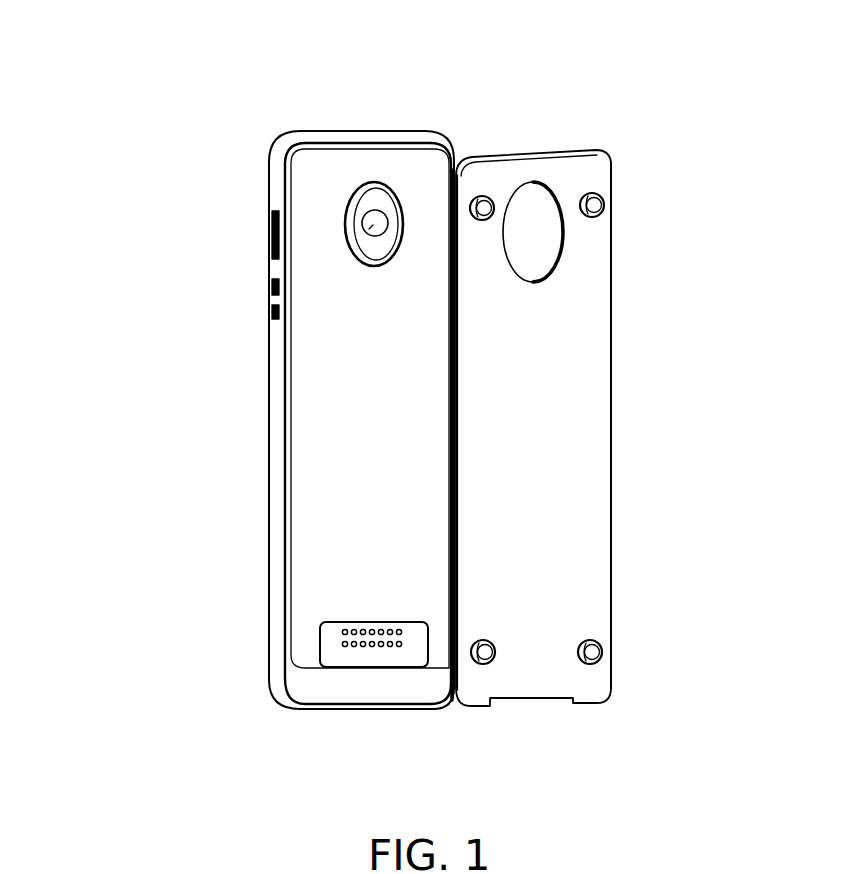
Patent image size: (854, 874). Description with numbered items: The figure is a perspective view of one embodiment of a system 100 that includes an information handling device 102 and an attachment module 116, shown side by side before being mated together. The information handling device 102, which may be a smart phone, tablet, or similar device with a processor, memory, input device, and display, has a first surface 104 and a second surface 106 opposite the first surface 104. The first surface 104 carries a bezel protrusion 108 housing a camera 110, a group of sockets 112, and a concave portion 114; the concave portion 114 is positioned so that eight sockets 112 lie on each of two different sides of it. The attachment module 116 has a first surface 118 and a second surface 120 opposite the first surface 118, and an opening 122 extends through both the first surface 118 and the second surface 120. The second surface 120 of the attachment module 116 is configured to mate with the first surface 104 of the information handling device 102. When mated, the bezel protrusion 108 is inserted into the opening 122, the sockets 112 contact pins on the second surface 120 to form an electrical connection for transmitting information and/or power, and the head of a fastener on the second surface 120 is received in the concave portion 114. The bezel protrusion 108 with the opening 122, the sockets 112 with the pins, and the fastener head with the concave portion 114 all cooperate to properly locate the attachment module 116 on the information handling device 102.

The system 100 is at (100, 72).
The information handling device 102 is at (276, 470).
The first surface 104 is at (305, 602).
The second surface 106 is at (258, 522).
The bezel protrusion 108 is at (357, 194).
The camera 110 is at (368, 270).
The sockets 112 is at (342, 648).
The concave portion 114 is at (378, 645).
The attachment module 116 is at (611, 453).
The first surface 118 is at (590, 590).
The second surface 120 is at (601, 136).
The opening 122 is at (537, 243).